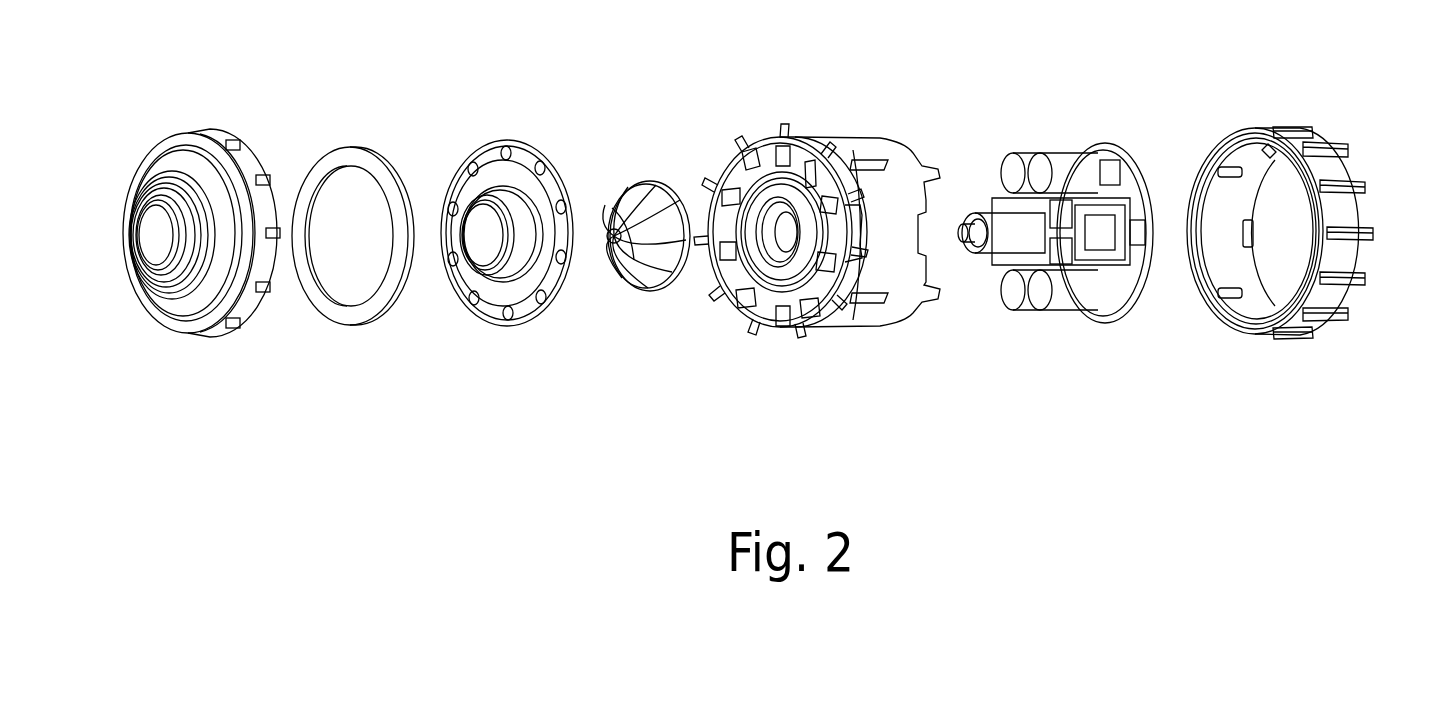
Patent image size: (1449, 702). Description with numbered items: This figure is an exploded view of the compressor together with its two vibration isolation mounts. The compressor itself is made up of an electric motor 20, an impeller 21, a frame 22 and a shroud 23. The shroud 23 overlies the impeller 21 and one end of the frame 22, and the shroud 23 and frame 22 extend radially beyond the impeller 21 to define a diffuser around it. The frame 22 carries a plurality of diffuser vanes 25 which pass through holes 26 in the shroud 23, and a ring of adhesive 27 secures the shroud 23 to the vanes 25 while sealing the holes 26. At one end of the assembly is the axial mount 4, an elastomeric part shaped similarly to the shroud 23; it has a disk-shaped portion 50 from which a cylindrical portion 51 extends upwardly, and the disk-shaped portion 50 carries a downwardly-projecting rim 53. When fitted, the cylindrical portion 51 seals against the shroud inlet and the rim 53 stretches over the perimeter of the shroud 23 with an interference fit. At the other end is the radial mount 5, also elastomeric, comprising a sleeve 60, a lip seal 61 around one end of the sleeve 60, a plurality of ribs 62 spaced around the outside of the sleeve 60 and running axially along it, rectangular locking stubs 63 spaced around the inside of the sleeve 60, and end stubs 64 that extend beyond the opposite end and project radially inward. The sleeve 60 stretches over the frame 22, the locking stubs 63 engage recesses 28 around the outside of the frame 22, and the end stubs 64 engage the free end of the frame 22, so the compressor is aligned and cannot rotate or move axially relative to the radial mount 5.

The axial mount 4 is at (184, 228).
The disk-shaped portion 50 is at (178, 297).
The cylindrical portion 51 is at (140, 257).
The rim 53 is at (205, 338).
The ring of adhesive 27 is at (352, 147).
The shroud 23 is at (507, 224).
The holes 26 is at (522, 305).
The impeller 21 is at (648, 180).
The frame 22 is at (817, 226).
The diffuser vanes 25 is at (760, 318).
The recesses 28 is at (868, 305).
The electric motor 20 is at (1093, 145).
The radial mount 5 is at (1305, 236).
The sleeve 60 is at (1348, 251).
The lip seal 61 is at (1255, 340).
The ribs 62 is at (1345, 288).
The locking stubs 63 is at (1232, 297).
The end stubs 64 is at (1256, 233).